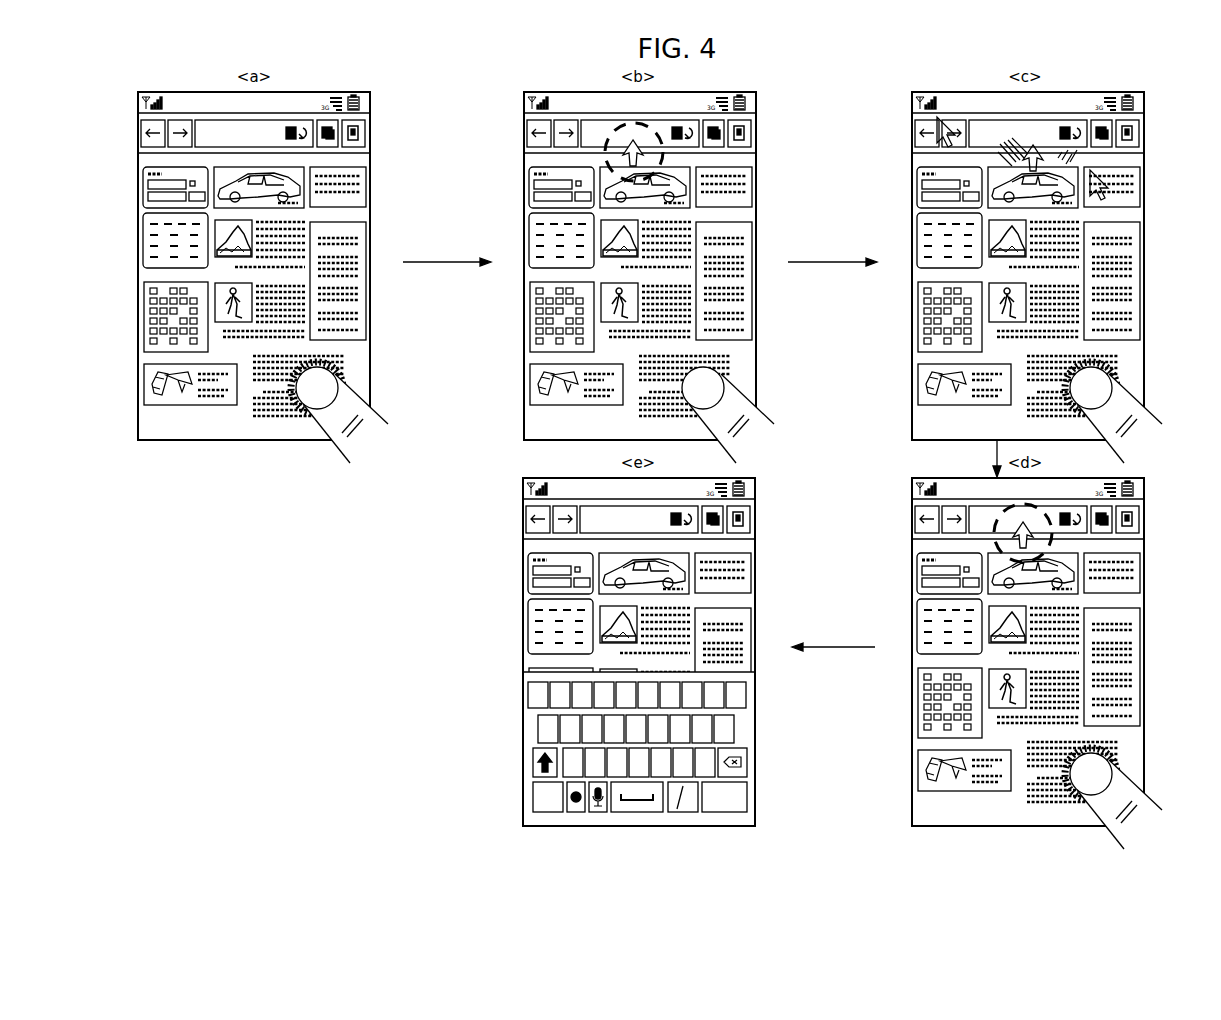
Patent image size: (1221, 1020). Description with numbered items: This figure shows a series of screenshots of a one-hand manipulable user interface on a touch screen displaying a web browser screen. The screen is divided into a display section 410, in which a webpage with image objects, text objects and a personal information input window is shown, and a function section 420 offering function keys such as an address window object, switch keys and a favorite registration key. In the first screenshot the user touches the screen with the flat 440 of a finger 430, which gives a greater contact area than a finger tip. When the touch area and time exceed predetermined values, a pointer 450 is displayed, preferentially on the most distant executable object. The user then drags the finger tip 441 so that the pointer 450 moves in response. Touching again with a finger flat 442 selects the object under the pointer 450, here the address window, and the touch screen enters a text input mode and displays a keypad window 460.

The display section 410 is at (223, 292).
The function section 420 is at (222, 132).
The finger 430 is at (364, 415).
The flat of finger 440 is at (362, 370).
The finger tip 441 is at (1130, 387).
The finger flat 442 is at (1125, 770).
The pointer 450 is at (606, 150).
The keypad window 460 is at (662, 742).